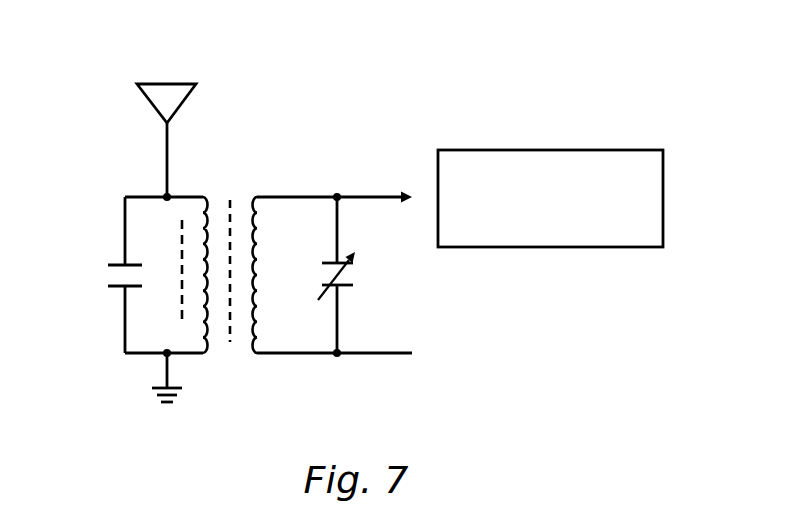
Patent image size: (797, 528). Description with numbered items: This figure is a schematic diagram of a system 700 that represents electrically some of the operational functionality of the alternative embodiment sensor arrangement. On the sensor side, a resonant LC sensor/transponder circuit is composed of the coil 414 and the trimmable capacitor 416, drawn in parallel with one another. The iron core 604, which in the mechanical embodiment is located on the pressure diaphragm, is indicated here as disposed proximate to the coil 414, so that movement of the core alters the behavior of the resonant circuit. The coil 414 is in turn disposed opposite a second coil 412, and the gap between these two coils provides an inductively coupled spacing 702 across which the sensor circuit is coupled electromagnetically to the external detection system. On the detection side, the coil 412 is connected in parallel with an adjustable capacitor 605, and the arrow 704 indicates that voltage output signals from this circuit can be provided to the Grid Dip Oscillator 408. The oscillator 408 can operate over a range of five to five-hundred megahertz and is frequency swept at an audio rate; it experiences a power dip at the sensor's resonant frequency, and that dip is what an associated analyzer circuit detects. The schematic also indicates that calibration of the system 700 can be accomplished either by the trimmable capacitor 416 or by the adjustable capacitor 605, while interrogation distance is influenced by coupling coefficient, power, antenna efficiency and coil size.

The system 700 is at (442, 118).
The iron core 604 is at (176, 253).
The coil 414 is at (206, 202).
The coil 412 is at (256, 218).
The arrow 704 is at (356, 198).
The Grid Dip Oscillator (GDO) 408 is at (534, 230).
The trimmable capacitor 416 is at (121, 288).
The adjustable capacitor 605 is at (343, 287).
The inductively coupled spacing 702 is at (236, 372).